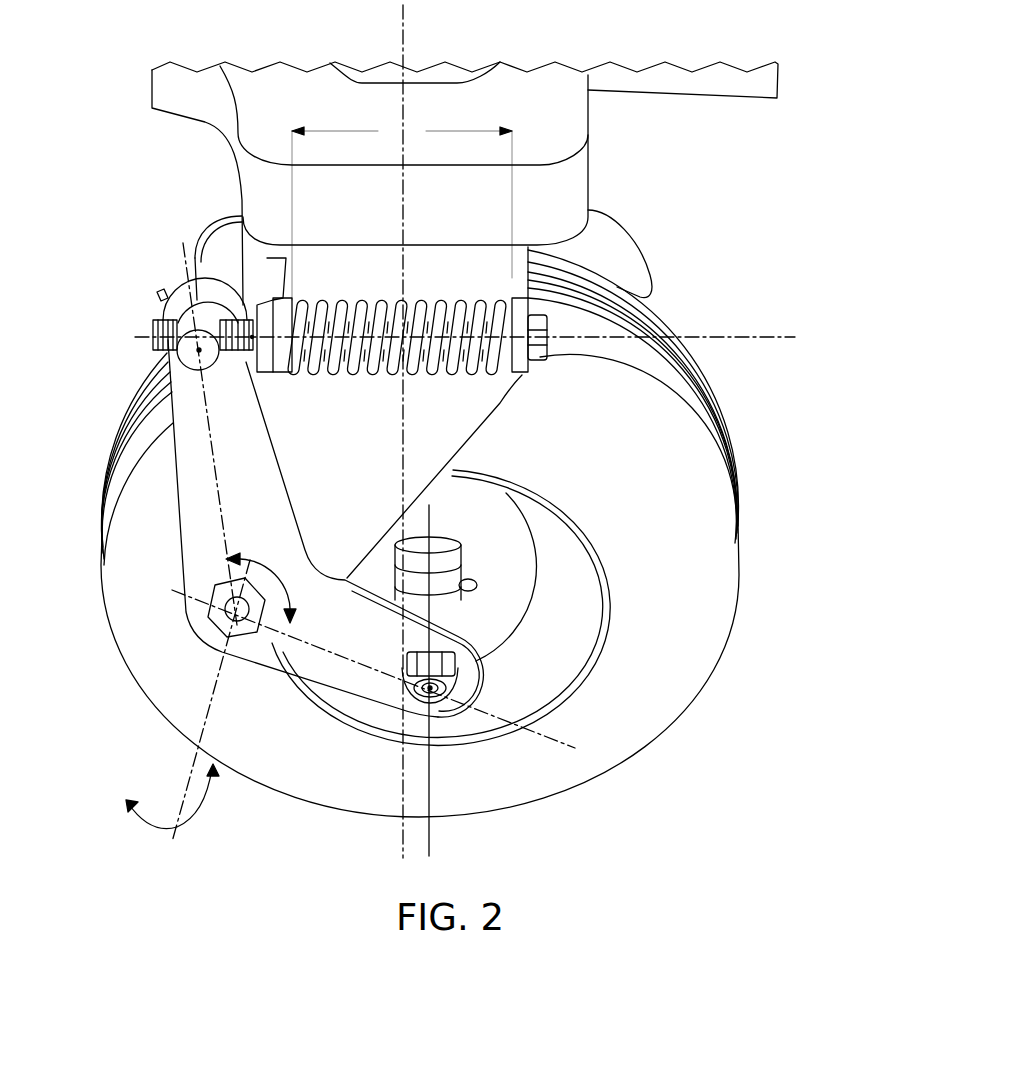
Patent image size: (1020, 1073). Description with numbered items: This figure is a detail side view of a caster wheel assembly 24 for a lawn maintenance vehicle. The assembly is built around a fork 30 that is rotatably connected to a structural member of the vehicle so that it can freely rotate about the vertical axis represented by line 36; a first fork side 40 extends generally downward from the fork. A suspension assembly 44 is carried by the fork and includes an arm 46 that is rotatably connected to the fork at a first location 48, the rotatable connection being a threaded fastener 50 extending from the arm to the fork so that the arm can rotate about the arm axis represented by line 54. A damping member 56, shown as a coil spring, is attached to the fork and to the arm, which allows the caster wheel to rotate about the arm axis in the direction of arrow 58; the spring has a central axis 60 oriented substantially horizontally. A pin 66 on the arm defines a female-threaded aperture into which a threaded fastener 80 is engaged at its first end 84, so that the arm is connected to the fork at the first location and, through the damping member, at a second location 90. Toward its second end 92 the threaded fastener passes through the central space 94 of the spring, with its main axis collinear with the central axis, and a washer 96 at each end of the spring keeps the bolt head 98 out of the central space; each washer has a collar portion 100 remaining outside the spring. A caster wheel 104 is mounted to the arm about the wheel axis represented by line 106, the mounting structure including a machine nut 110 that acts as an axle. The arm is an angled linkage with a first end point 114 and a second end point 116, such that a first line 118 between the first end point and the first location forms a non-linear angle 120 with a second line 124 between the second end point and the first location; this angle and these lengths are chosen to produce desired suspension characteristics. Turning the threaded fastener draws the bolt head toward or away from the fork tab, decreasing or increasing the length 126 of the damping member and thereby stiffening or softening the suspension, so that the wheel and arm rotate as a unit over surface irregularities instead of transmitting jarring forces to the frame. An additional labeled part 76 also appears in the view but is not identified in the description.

The caster wheel assembly 24 is at (112, 183).
The fork 30 is at (483, 445).
The vertical axis line 36 is at (403, 38).
The first fork side 40 is at (525, 393).
The suspension assembly 44 is at (90, 575).
The arm 46 is at (207, 222).
The first location 48 is at (265, 603).
The threaded fastener 50 is at (222, 630).
The arm axis 54 is at (215, 702).
The damping member 56 is at (348, 377).
The arrow 58 is at (197, 822).
The central axis 60 is at (722, 337).
The pin 66 is at (200, 365).
The pin 76 is at (152, 297).
The threaded fastener 80 is at (153, 347).
The first end 84 is at (153, 327).
The second location 90 is at (252, 337).
The second end 92 is at (558, 305).
The central space 94 is at (392, 326).
The washer 96 is at (285, 298).
The bolt head 98 is at (538, 362).
The collar portion 100 is at (284, 376).
The caster wheel 104 is at (738, 615).
The wheel axis line 106 is at (430, 832).
The machine nut 110 is at (447, 693).
The first end point 114 is at (198, 351).
The second end point 116 is at (410, 677).
The first line 118 is at (227, 510).
The non-linear angle 120 is at (292, 627).
The second line 124 is at (368, 672).
The length 126 is at (402, 209).